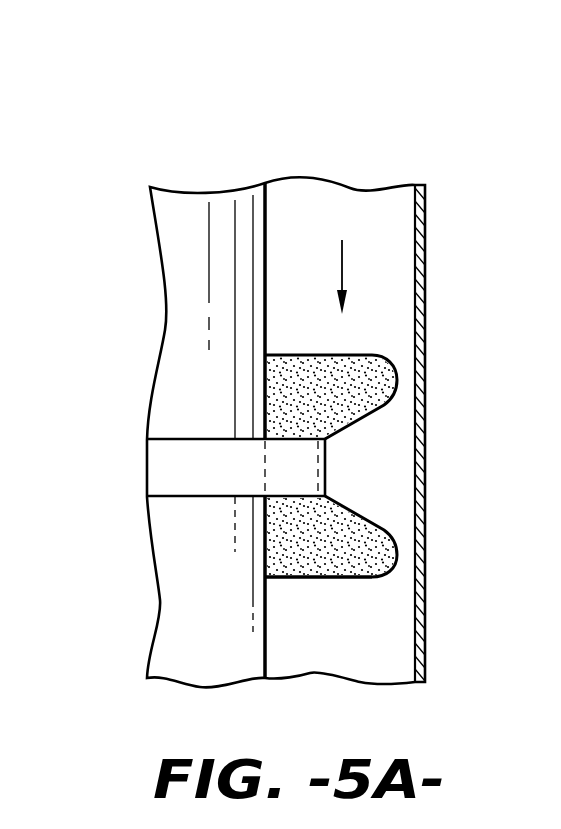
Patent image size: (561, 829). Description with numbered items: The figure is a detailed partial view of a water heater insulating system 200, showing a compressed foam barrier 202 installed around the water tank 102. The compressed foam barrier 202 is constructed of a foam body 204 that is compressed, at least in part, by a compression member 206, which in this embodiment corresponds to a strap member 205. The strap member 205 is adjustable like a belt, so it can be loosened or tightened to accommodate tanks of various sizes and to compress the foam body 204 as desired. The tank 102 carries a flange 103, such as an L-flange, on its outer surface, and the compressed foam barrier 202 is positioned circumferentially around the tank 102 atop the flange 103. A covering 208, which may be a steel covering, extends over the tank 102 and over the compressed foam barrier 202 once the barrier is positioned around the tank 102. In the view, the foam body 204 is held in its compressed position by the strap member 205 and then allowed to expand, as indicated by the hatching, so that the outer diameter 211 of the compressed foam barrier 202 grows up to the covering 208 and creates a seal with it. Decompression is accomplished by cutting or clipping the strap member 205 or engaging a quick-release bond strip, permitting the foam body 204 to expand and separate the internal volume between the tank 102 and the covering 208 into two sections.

The system 200 is at (389, 102).
The tank 102 is at (266, 212).
The covering 208 is at (424, 293).
The foam body 204 is at (376, 383).
The compressed foam barrier 202 is at (342, 398).
The outer diameter 211 is at (378, 531).
The flange 103 is at (300, 579).
The strap member 205 is at (208, 434).
The compression member 206 is at (208, 439).